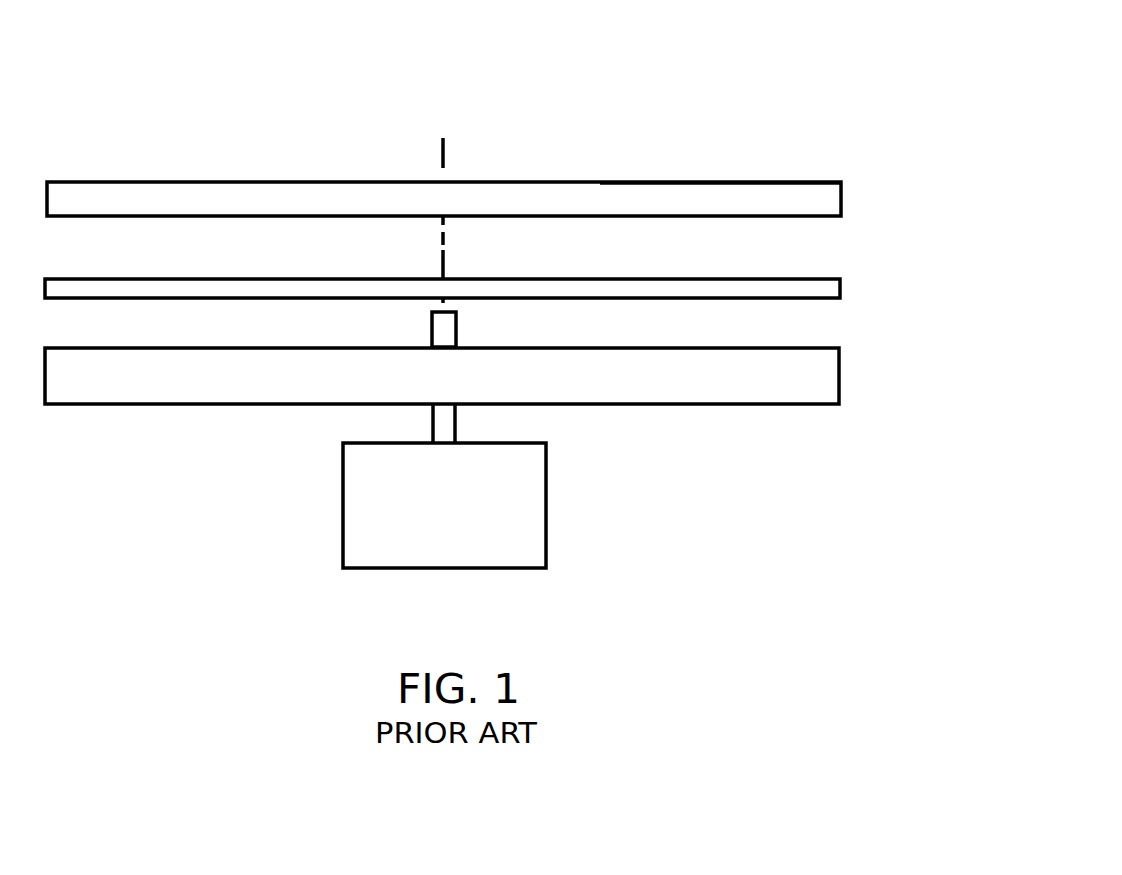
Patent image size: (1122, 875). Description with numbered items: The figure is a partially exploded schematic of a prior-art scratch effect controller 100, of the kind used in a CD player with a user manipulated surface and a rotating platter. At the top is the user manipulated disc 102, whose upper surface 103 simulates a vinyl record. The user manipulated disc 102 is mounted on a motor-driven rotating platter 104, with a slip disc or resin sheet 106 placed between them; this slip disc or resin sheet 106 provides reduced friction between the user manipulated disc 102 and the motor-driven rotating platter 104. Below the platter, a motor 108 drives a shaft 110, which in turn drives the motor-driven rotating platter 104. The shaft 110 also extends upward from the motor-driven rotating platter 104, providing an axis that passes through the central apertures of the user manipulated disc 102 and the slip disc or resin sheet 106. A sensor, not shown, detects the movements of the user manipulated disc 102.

The scratch effect controller 100 is at (869, 110).
The user manipulated disc 102 is at (842, 196).
The upper surface 103 is at (752, 180).
The motor-driven rotating platter 104 is at (840, 372).
The slip disc or resin sheet 106 is at (841, 288).
The motor 108 is at (548, 500).
The shaft 110 is at (457, 422).